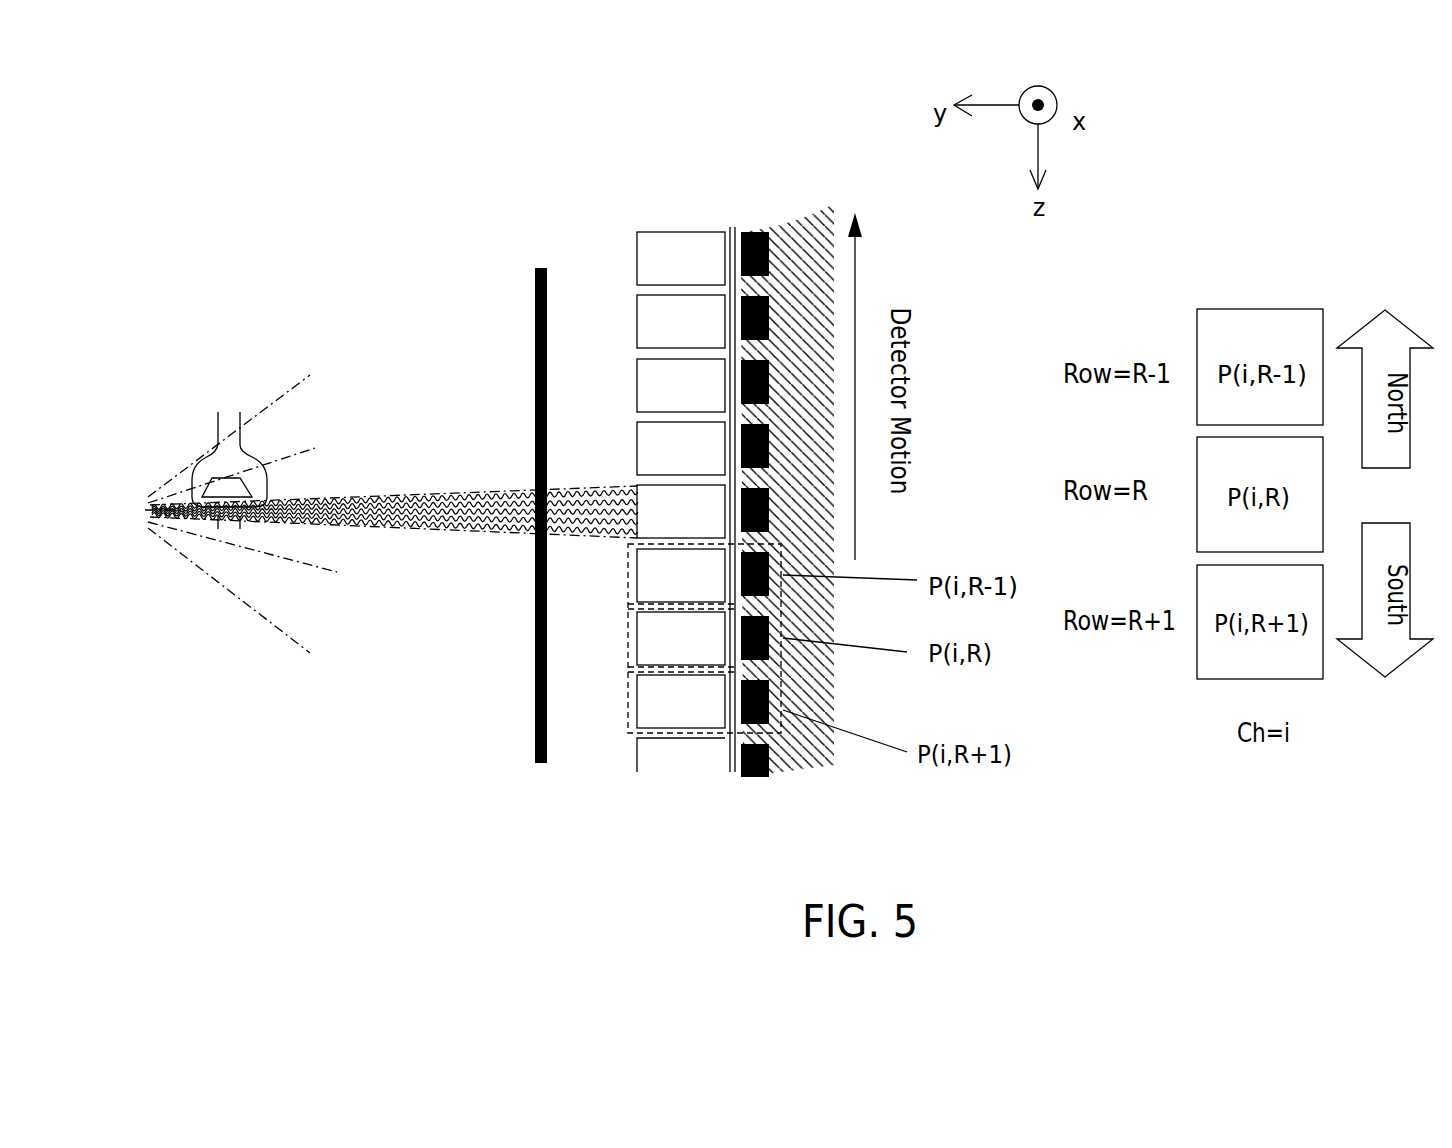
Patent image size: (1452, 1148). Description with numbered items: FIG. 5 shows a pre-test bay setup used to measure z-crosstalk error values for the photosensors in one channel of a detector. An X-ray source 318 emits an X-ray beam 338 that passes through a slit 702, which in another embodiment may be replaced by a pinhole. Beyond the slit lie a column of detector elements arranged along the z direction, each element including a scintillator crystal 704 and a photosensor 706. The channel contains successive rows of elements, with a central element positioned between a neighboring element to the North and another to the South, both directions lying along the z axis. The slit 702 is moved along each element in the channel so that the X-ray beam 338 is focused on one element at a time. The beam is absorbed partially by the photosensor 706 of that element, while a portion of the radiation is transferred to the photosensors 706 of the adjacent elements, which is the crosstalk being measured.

The X-ray source 318 is at (218, 412).
The X-ray beam 338 is at (417, 497).
The slit 702 is at (535, 765).
The scintillator crystal 704 is at (669, 752).
The photosensor 706 is at (753, 777).